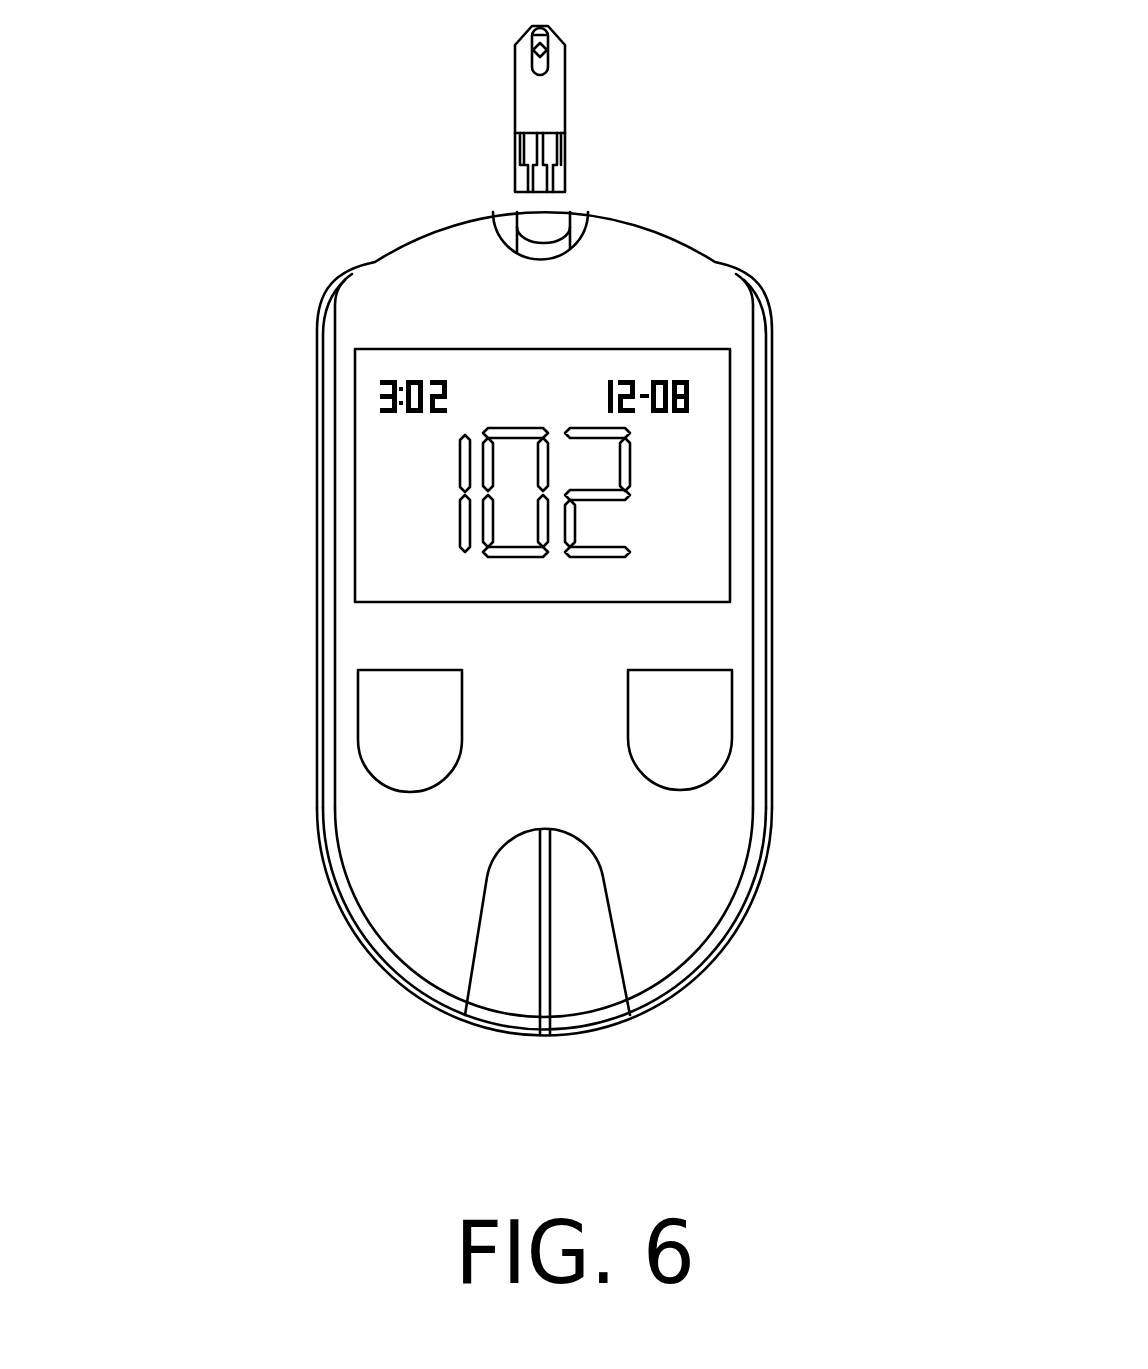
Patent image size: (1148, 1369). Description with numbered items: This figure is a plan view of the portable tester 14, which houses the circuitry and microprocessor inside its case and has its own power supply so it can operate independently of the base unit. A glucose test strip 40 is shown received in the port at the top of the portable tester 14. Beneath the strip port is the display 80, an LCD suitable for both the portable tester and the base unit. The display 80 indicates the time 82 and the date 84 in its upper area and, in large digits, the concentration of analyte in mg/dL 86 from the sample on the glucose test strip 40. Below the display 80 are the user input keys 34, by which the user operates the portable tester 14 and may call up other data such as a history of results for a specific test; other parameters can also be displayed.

The portable tester 14 is at (823, 300).
The glucose test strip 40 is at (522, 87).
The display 80 is at (380, 507).
The time 82 is at (377, 390).
The date 84 is at (660, 367).
The concentration of analyte in mg/dL 86 is at (603, 567).
The user input keys 34 is at (397, 728).